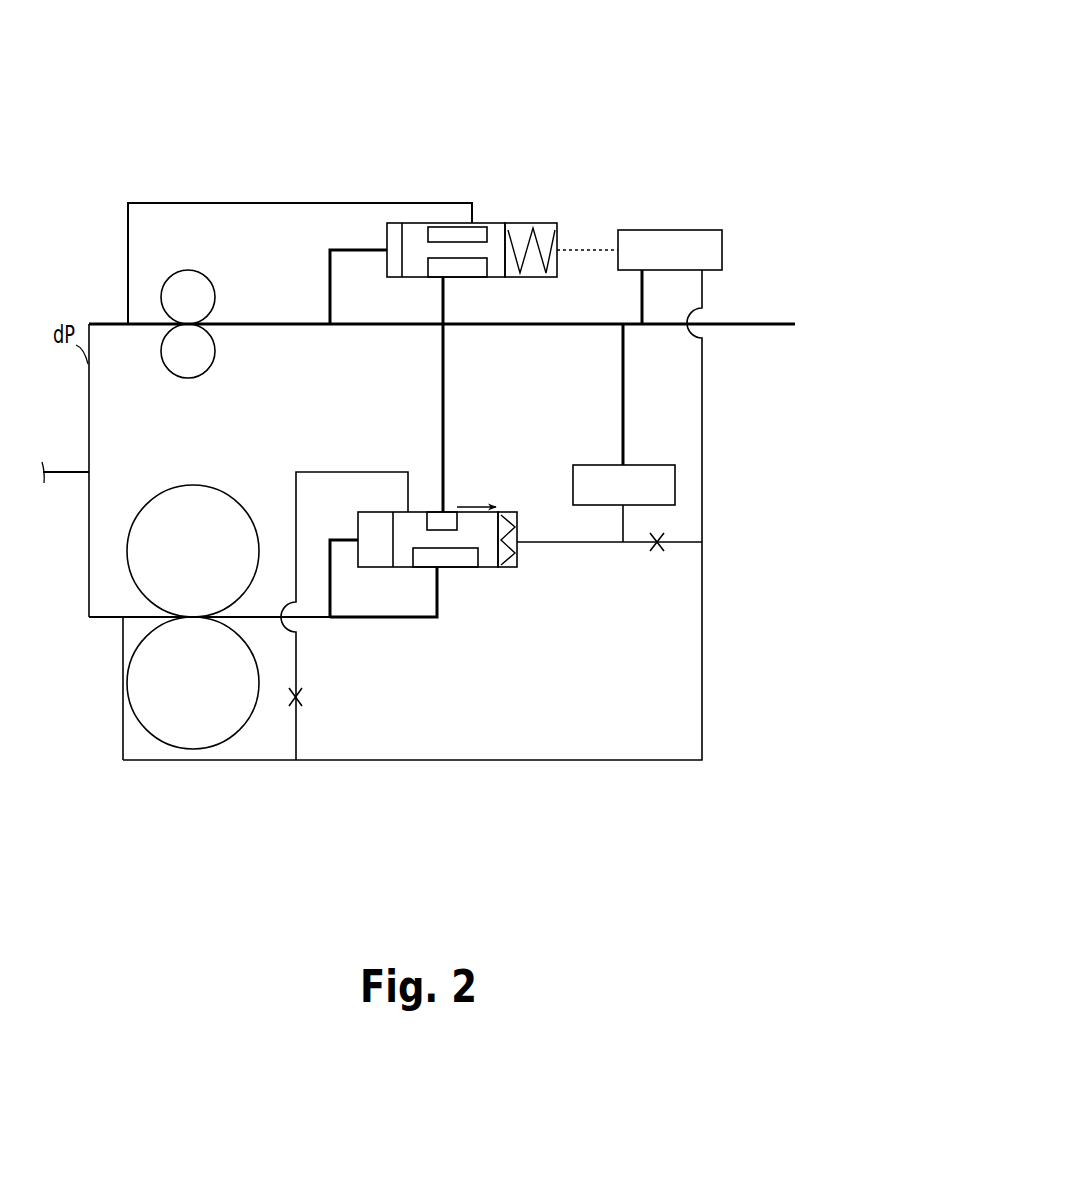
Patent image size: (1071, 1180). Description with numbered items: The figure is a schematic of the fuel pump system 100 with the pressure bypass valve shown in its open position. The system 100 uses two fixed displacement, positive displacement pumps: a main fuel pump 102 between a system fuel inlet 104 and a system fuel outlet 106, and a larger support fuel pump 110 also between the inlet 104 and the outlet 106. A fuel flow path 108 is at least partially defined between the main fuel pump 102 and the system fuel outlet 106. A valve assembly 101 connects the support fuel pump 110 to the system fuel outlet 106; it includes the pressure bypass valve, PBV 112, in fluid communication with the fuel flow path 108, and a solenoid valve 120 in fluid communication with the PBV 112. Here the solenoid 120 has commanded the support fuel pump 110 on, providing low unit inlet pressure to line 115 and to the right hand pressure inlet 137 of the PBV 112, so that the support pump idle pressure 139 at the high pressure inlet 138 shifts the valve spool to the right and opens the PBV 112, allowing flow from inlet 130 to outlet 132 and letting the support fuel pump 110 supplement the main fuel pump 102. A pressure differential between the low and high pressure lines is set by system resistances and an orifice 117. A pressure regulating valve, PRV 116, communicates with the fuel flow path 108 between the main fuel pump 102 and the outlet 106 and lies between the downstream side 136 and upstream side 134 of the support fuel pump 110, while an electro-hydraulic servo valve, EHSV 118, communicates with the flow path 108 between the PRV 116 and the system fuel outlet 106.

The fuel pump system 100 is at (172, 101).
The valve assembly 101 is at (674, 434).
The main fuel pump 102 is at (224, 361).
The system fuel inlet 104 is at (72, 461).
The system fuel outlet 106 is at (734, 312).
The fuel flow path 108 is at (275, 320).
The support fuel pump 110 is at (141, 599).
The pressure bypass valve (PBV) 112 is at (446, 574).
The line 115 is at (562, 540).
The pressure regulating valve (PRV) 116 is at (473, 279).
The orifice 117 is at (656, 548).
The electro-hydraulic servo valve (EHSV) 118 is at (654, 230).
The solenoid valve 120 is at (592, 464).
The inlet of the PBV 130 is at (436, 575).
The outlet of the PBV 132 is at (447, 511).
The upstream side of the support fuel pump 134 is at (93, 616).
The downstream side of the support fuel pump 136 is at (248, 619).
The right hand pressure inlet of the PBV 137 is at (518, 551).
The high pressure inlet of the PBV 138 is at (357, 539).
The support pump idle pressure 139 is at (380, 620).